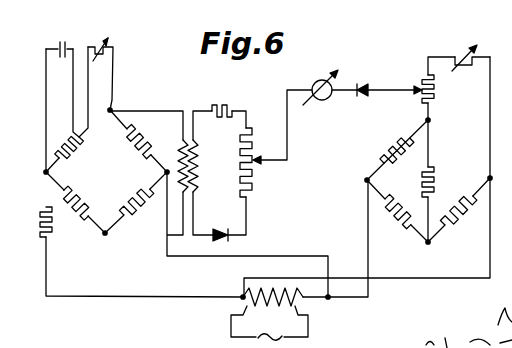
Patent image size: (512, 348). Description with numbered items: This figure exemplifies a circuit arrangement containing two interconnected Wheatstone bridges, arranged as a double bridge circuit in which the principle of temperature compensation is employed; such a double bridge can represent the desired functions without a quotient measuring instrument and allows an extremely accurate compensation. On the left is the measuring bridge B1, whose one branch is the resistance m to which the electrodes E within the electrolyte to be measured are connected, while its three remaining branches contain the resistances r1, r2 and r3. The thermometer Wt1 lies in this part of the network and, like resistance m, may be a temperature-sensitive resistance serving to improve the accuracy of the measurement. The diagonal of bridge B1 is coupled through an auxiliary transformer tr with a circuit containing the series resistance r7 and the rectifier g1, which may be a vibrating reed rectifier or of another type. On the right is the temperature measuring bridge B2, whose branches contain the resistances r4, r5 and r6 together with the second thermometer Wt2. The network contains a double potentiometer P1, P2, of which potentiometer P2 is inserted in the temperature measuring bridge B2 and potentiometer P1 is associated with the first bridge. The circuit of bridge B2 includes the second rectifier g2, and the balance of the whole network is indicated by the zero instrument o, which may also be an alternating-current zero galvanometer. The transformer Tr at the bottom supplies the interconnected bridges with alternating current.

The electrodes E is at (59, 38).
The thermometer Wt1 is at (105, 66).
The resistance m is at (66, 143).
The Wheatstone bridge B1 is at (106, 176).
The resistance r1 is at (70, 214).
The resistance r2 is at (134, 218).
The resistance r3 is at (143, 141).
The series resistance r7 is at (222, 102).
The auxiliary transformer tr is at (195, 163).
The potentiometer P1 is at (276, 143).
The rectifier g1 is at (221, 224).
The zero instrument o is at (330, 83).
The rectifier g2 is at (389, 82).
The thermometer Wt2 is at (469, 51).
The potentiometer P2 is at (441, 90).
The resistance r6 is at (393, 145).
The Wheatstone bridge B2 is at (441, 182).
The resistance r5 is at (393, 220).
The resistance r4 is at (458, 220).
The transformer Tr is at (303, 305).